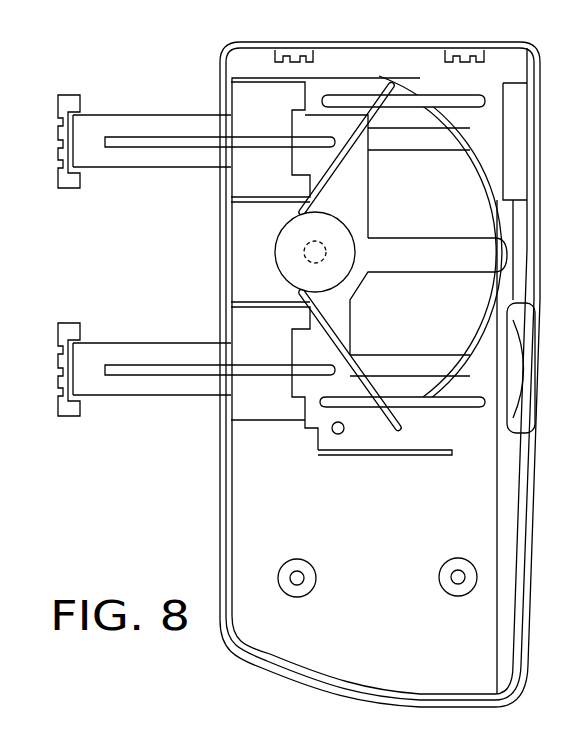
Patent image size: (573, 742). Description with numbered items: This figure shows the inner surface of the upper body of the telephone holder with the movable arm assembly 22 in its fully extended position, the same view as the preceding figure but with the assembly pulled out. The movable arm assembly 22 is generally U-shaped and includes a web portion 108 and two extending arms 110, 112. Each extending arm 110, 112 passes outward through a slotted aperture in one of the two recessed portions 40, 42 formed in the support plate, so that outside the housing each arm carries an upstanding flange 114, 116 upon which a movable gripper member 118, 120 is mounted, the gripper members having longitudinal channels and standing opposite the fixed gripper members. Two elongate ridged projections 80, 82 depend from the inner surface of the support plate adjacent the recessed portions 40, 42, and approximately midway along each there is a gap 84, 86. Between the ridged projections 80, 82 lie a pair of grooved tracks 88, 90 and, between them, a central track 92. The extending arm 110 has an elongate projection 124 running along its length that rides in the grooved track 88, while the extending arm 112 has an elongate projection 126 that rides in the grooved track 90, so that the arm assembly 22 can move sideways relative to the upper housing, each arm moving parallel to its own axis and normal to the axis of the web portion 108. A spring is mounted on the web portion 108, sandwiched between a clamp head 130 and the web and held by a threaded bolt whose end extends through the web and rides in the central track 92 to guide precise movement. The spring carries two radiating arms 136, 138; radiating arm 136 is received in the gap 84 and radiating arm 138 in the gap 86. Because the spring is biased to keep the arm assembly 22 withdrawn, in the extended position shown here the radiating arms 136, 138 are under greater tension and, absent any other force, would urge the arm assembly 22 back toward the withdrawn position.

The movable arm assembly 22 is at (146, 108).
The recessed portion 40 is at (247, 97).
The recessed portion 42 is at (228, 422).
The ridged projection 80 is at (442, 100).
The ridged projection 82 is at (448, 407).
The gap 84 is at (400, 93).
The gap 86 is at (407, 413).
The grooved track 88 is at (431, 157).
The grooved track 90 is at (430, 370).
The central track 92 is at (433, 250).
The web portion 108 is at (357, 199).
The extending arm 110 is at (120, 158).
The extending arm 112 is at (125, 350).
The upstanding flange 114 is at (80, 165).
The upstanding flange 116 is at (79, 400).
The movable gripper member 118 is at (68, 103).
The movable gripper member 120 is at (69, 328).
The elongate projection 124 is at (197, 143).
The elongate projection 126 is at (190, 364).
The clamp head 130 is at (275, 257).
The radiating arm 136 is at (376, 77).
The radiating arm 138 is at (390, 413).